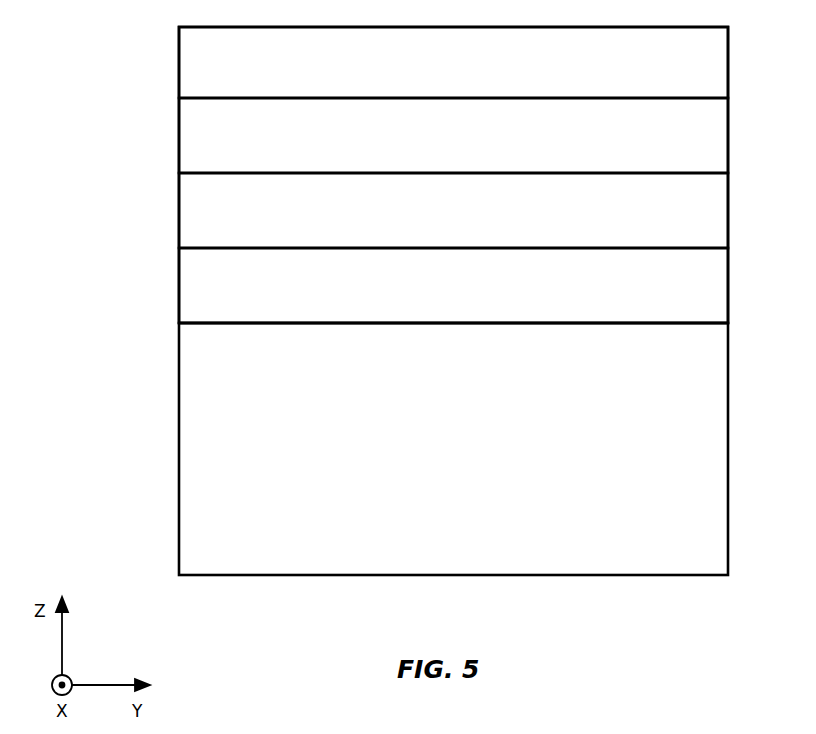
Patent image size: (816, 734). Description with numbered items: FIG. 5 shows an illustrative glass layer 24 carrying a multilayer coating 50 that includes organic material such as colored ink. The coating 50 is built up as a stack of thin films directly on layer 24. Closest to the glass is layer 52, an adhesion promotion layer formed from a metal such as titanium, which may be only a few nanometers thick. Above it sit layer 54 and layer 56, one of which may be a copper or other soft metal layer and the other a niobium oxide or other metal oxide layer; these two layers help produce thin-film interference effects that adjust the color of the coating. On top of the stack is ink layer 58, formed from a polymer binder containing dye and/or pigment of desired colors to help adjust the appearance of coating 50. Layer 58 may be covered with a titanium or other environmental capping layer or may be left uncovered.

The layer 24 is at (722, 467).
The coating 50 is at (157, 330).
The adhesion promotion layer 52 is at (722, 285).
The copper layer 54 is at (722, 212).
The niobium oxide layer 56 is at (722, 135).
The ink layer 58 is at (722, 68).